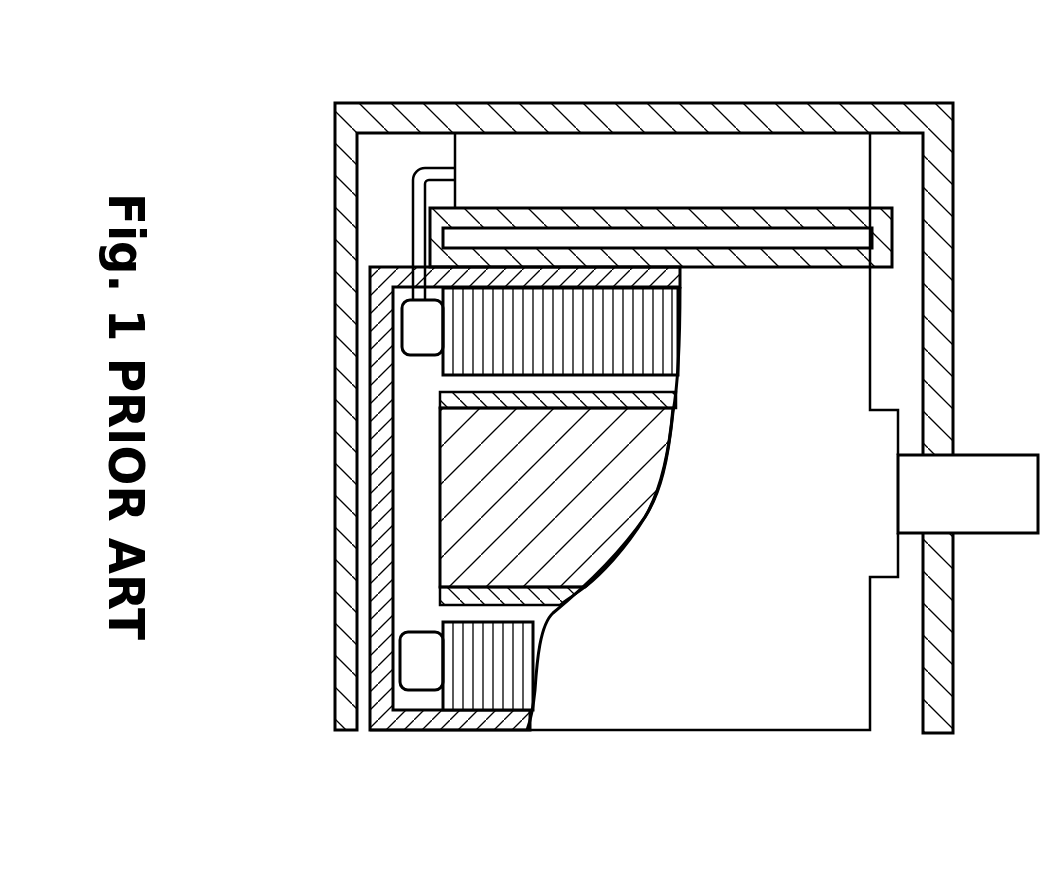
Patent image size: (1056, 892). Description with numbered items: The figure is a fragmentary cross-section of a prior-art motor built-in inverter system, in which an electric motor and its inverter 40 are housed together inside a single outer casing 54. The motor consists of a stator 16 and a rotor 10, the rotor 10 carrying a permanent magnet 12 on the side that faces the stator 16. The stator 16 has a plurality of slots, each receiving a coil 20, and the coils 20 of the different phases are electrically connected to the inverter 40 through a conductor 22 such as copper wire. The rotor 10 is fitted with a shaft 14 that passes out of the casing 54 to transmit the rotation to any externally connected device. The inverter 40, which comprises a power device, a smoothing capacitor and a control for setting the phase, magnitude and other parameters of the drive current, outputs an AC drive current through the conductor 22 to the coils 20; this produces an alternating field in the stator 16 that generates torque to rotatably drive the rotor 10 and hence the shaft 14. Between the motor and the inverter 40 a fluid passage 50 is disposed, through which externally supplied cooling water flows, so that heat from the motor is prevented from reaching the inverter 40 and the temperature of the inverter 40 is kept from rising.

The rotor 10 is at (452, 533).
The permanent magnet 12 is at (440, 413).
The shaft 14 is at (987, 480).
The stator 16 is at (457, 348).
The coil 20 is at (432, 267).
The conductor 22 is at (415, 186).
The inverter 40 is at (790, 144).
The fluid passage 50 is at (890, 208).
The outer casing 54 is at (335, 157).